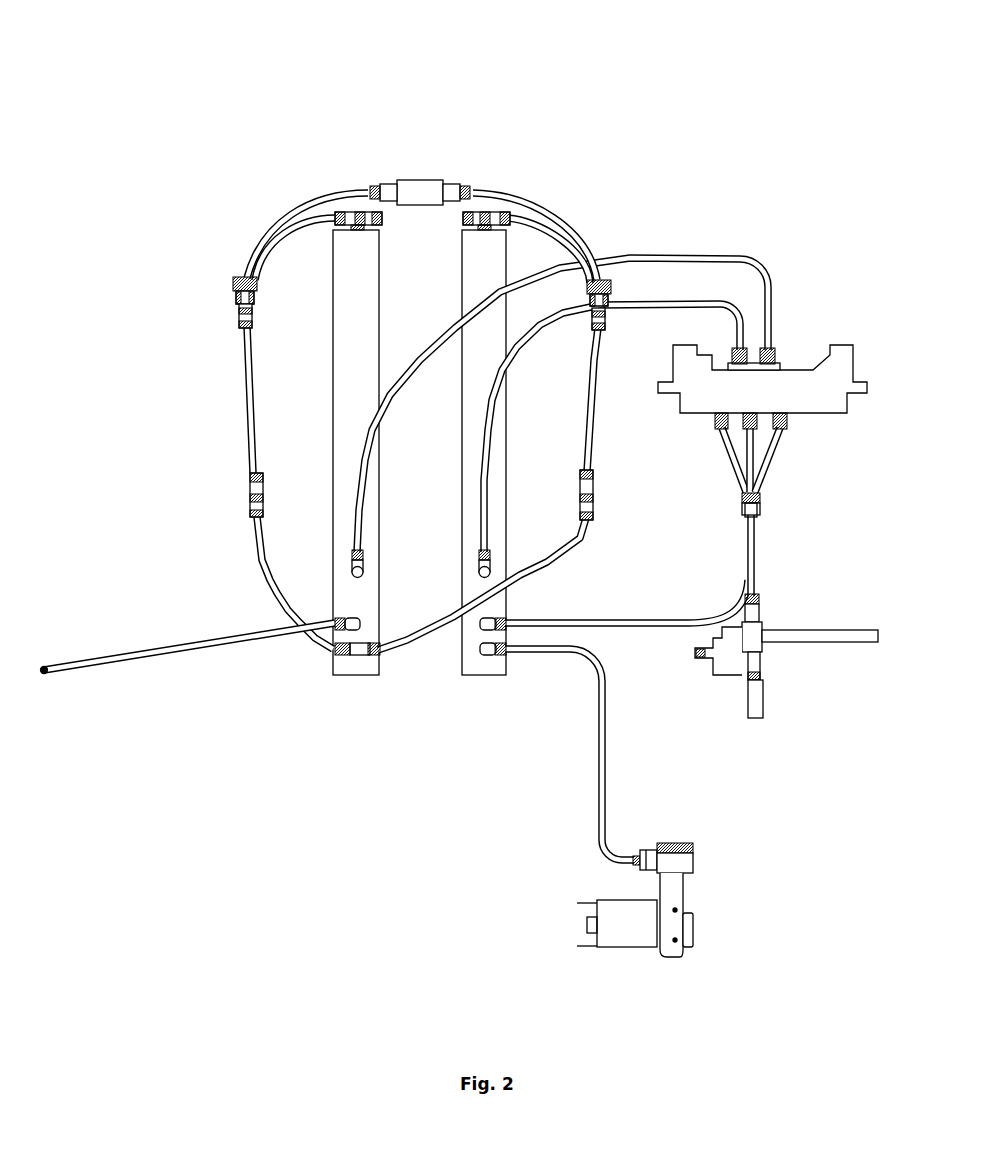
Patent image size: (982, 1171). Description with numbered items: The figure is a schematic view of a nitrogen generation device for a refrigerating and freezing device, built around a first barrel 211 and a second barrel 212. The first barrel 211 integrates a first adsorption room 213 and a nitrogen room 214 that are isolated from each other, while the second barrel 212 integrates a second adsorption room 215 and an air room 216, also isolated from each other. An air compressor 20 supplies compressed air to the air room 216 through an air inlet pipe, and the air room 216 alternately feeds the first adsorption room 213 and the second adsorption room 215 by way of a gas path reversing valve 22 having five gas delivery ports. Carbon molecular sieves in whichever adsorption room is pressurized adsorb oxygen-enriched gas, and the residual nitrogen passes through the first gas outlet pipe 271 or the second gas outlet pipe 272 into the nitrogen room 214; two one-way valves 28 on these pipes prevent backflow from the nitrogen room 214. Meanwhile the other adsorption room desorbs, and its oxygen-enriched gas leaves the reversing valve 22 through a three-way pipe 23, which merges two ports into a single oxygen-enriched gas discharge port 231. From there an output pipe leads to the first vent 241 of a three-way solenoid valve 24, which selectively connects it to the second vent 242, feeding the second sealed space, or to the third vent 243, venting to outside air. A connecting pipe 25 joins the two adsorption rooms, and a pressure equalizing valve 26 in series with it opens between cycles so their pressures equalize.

The air compressor 20 is at (637, 937).
The gas path reversing valve 22 is at (823, 377).
The three-way pipe 23 is at (757, 490).
The oxygen-enriched gas discharge port 231 is at (758, 518).
The three-way solenoid valve 24 is at (753, 640).
The first vent 241 is at (757, 599).
The second vent 242 is at (765, 728).
The third vent 243 is at (880, 652).
The connecting pipe 25 is at (422, 207).
The pressure equalizing valve 26 is at (403, 197).
The first gas outlet pipe 271 is at (243, 347).
The second gas outlet pipe 272 is at (592, 403).
The one-way valve 28 is at (250, 493).
The first barrel 211 is at (331, 683).
The second barrel 212 is at (469, 684).
The first adsorption room 213 is at (358, 273).
The nitrogen room 214 is at (348, 598).
The second adsorption room 215 is at (500, 243).
The air room 216 is at (503, 606).